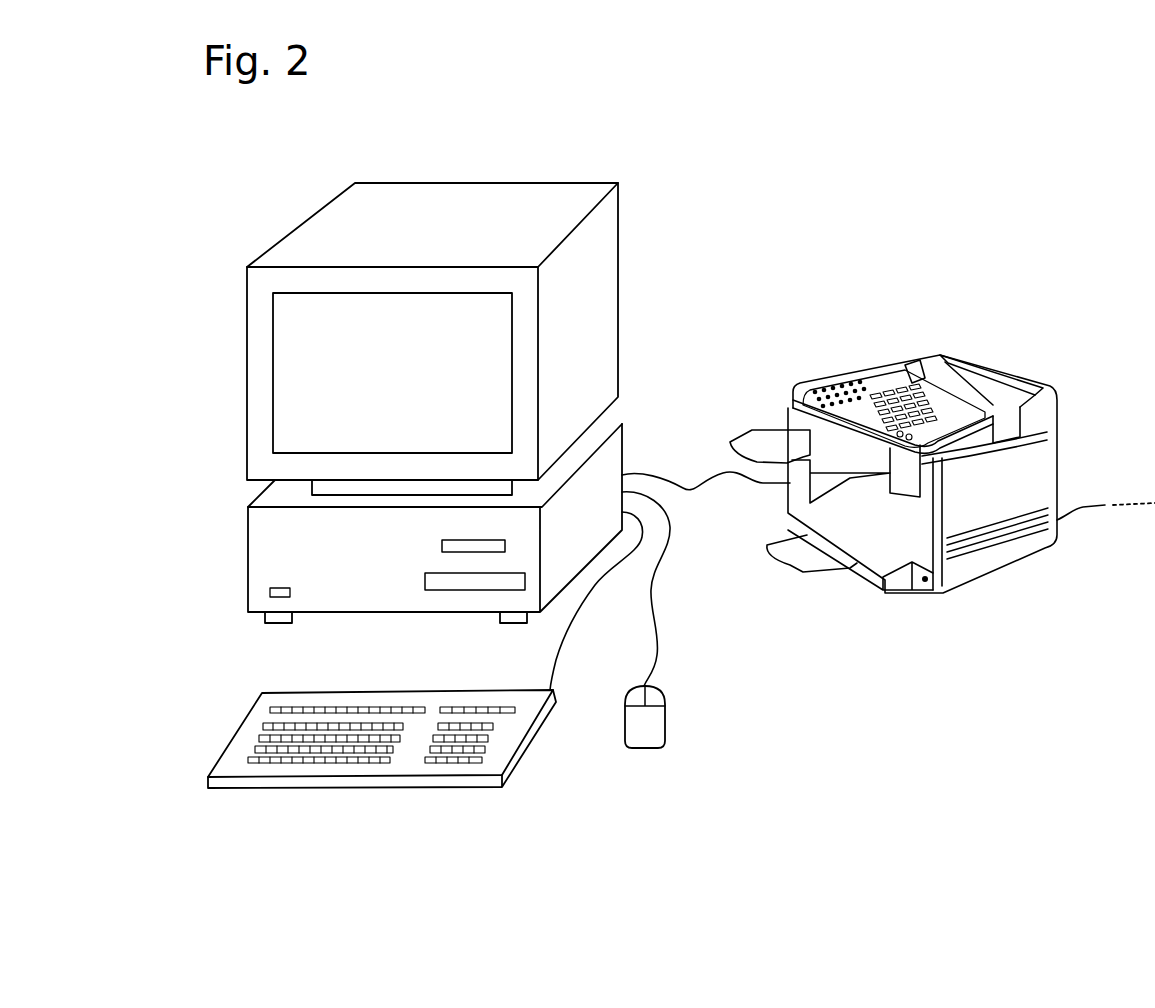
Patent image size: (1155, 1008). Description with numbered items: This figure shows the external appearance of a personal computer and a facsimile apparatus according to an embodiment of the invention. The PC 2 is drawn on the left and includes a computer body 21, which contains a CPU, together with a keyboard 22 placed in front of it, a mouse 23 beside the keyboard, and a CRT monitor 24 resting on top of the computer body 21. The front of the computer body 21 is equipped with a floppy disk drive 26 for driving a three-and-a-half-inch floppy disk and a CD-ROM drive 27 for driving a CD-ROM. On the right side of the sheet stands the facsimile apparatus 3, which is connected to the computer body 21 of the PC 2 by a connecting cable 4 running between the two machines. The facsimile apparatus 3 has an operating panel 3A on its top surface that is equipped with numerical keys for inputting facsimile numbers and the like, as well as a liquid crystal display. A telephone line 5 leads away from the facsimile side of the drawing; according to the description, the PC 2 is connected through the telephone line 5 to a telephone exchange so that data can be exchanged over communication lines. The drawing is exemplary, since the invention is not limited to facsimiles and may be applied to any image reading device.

The personal computer 2 is at (476, 157).
The facsimile apparatus 3 is at (896, 328).
The operating panel 3A is at (827, 385).
The connecting cable 4 is at (698, 485).
The telephone line 5 is at (1103, 504).
The computer body 21 is at (248, 551).
The keyboard 22 is at (332, 788).
The mouse 23 is at (636, 748).
The CRT monitor 24 is at (618, 300).
The floppy disk drive 26 is at (442, 545).
The CD-ROM drive 27 is at (460, 590).